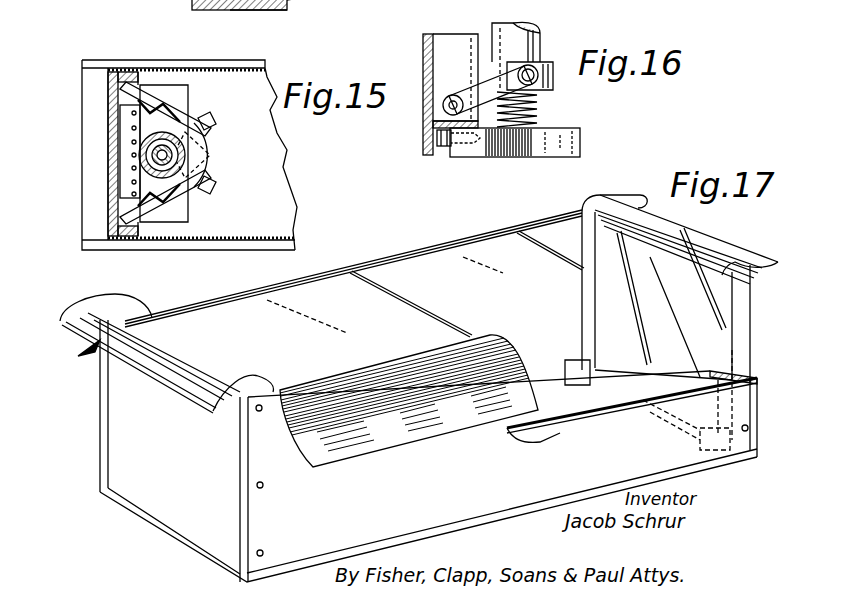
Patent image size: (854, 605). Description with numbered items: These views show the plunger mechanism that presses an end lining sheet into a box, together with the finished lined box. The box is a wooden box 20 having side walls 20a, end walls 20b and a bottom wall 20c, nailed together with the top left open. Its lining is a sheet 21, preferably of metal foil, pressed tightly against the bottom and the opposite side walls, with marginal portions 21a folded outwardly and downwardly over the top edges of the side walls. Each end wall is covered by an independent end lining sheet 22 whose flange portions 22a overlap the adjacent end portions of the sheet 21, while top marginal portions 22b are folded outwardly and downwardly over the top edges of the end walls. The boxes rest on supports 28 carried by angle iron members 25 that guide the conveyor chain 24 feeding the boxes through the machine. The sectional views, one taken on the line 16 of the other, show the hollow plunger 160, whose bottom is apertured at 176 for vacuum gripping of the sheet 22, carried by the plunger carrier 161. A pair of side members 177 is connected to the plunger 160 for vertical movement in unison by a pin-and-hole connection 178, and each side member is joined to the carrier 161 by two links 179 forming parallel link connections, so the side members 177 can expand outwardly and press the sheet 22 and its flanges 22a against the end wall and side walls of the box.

In FIG. 15, the section line 16 is at (100, 248).
In FIG. 15, the wooden box 20 is at (80, 229).
In FIG. 17, the wooden box 20 is at (108, 438).
In FIG. 17, the side walls 20a is at (100, 408).
In FIG. 17, the end walls 20b is at (152, 497).
In FIG. 17, the bottom wall 20c is at (165, 531).
In FIG. 15, the lining sheet 21 is at (280, 238).
In FIG. 17, the lining sheet 21 is at (382, 280).
In FIG. 17, the marginal portions 21a is at (395, 440).
In FIG. 15, the end lining sheet 22 is at (108, 137).
In FIG. 17, the end lining sheet 22 is at (620, 250).
In FIG. 15, the flange portions 22a is at (122, 70).
In FIG. 17, the flange portions 22a is at (582, 298).
In FIG. 17, the top marginal portions 22b is at (140, 353).
In FIG. 15, the conveyor chain 24 is at (248, 10).
In FIG. 15, the angle iron members 25 is at (219, 6).
In FIG. 15, the supports 28 is at (290, 0).
In FIG. 15, the plunger 160 is at (188, 92).
In FIG. 16, the plunger 160 is at (530, 152).
In FIG. 15, the plunger carrier 161 is at (185, 148).
In FIG. 16, the plunger carrier 161 is at (538, 45).
In FIG. 15, the apertures 176 is at (134, 182).
In FIG. 15, the side members 177 is at (108, 103).
In FIG. 16, the side members 177 is at (423, 46).
In FIG. 16, the pin-and-hole connection 178 is at (440, 150).
In FIG. 15, the links 179 is at (175, 110).
In FIG. 16, the links 179 is at (470, 82).